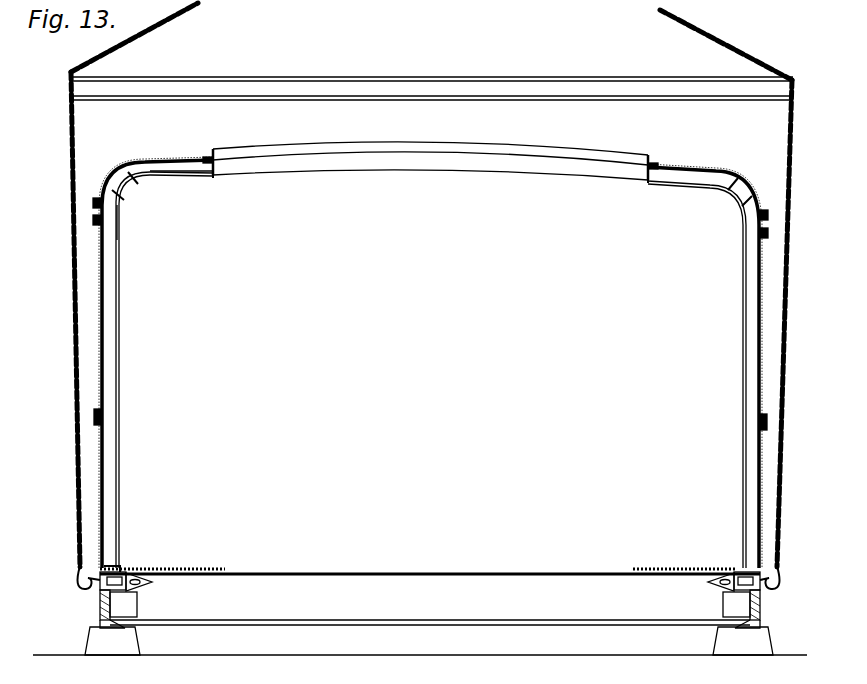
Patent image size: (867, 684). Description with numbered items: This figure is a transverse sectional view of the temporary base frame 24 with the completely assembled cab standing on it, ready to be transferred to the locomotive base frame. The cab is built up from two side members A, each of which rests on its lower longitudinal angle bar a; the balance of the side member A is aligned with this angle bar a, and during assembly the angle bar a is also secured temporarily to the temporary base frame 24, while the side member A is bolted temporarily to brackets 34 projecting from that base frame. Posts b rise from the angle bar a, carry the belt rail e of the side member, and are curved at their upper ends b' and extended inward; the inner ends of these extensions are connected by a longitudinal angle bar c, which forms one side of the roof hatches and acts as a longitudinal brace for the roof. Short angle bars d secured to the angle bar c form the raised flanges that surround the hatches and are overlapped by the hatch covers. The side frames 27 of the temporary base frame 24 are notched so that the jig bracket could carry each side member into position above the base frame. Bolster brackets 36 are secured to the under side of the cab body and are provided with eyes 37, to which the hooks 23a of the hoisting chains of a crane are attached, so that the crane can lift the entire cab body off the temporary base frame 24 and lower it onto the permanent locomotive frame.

The hook 23a is at (422, 291).
The eye 37 is at (78, 584).
The side frame 27 is at (100, 607).
The bolster bracket 36 is at (139, 594).
The temporary base frame 24 is at (430, 614).
The bracket 34 is at (160, 521).
The lower longitudinal angle bar a is at (741, 556).
The post b is at (181, 183).
The curved upper end of post b' is at (135, 219).
The longitudinal angle bar c is at (215, 177).
The short angle bar d is at (213, 149).
The belt rail e is at (97, 415).
The inner guide rail k is at (104, 352).
The side member A is at (108, 326).